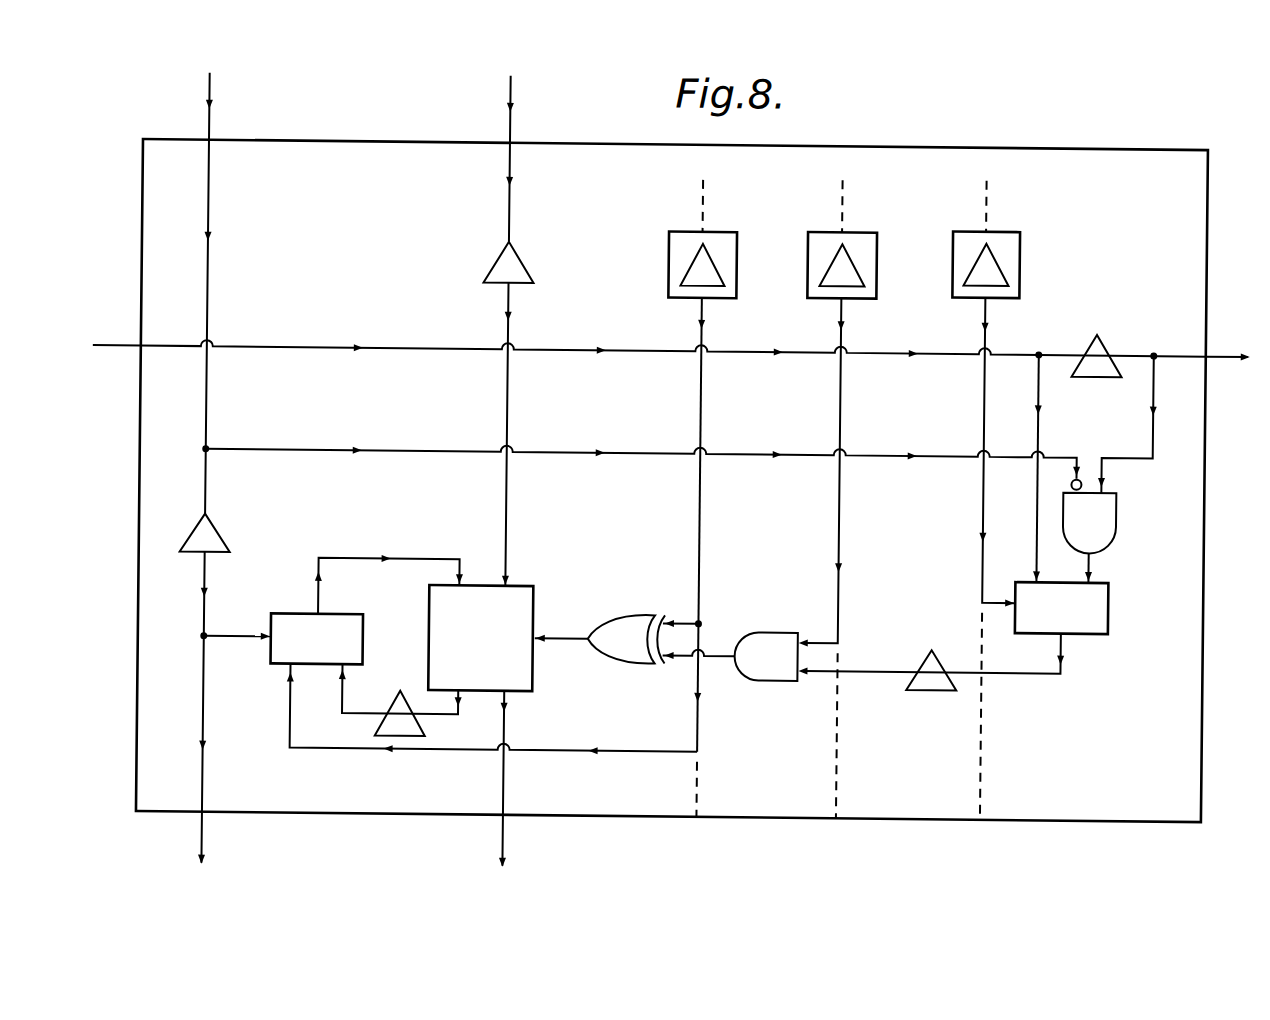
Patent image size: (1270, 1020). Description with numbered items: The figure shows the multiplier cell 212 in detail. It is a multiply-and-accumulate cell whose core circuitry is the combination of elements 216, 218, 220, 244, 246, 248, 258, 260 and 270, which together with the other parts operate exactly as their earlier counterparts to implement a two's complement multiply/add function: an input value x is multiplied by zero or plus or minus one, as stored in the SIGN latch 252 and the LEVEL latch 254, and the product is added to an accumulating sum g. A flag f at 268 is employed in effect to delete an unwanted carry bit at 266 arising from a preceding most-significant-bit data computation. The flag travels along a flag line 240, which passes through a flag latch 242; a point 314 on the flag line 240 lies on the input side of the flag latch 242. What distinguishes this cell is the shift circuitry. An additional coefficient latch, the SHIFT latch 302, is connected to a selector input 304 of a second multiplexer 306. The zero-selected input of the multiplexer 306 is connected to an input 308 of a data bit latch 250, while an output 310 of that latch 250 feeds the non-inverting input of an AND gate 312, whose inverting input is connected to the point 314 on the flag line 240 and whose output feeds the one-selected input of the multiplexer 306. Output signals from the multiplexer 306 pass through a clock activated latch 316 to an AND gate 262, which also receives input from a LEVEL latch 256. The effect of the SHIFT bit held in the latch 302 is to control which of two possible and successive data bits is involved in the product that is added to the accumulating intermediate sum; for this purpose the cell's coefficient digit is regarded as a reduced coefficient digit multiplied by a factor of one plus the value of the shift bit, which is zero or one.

The multiplier cell 212 is at (980, 137).
The multiply/add element 216 is at (210, 84).
The g signal line 218 is at (511, 87).
The x signal bus 220 is at (96, 345).
The flag line 240 is at (210, 191).
The flag latch 242 is at (203, 521).
The buffer 244 is at (500, 258).
The adder 246 is at (530, 664).
The x conductor 248 is at (400, 343).
The data bit latch 250 is at (1100, 365).
The SIGN latch 252 is at (684, 293).
The LEVEL latch 254 is at (822, 292).
The LEVEL latch 256 is at (704, 176).
The exclusive-OR gate 258 is at (630, 614).
The multiplexer 260 is at (290, 611).
The AND gate 262 is at (771, 674).
The carry bit 266 is at (391, 724).
The flag f 268 is at (228, 636).
The multiply/add element 270 is at (389, 556).
The SHIFT latch 302 is at (1022, 246).
The selector input 304 is at (1003, 594).
The second multiplexer 306 is at (1106, 625).
The data bit latch input 308 is at (1041, 343).
The data bit latch output 310 is at (1156, 343).
The AND gate 312 is at (1104, 503).
The flag line point 314 is at (209, 448).
The clock activated latch 316 is at (936, 683).